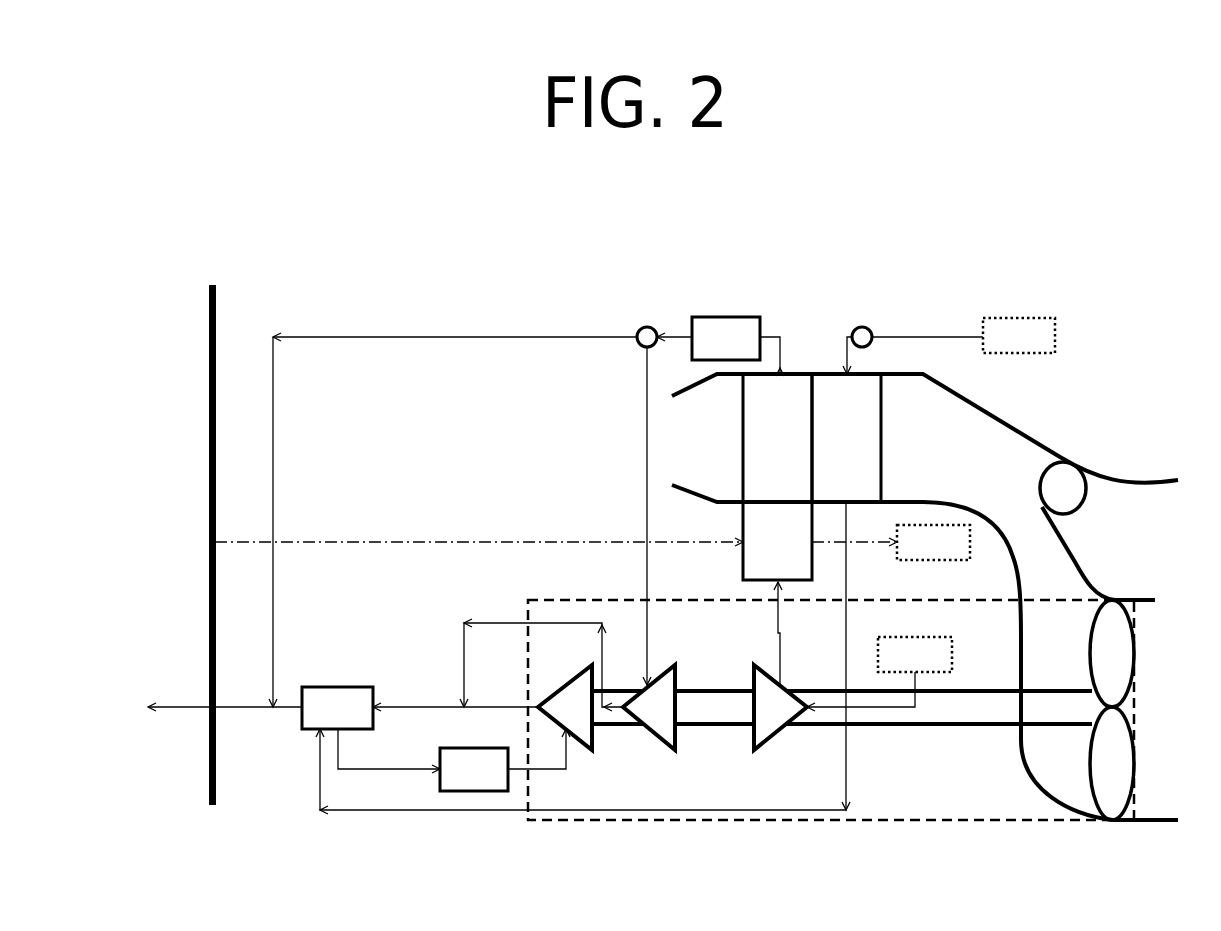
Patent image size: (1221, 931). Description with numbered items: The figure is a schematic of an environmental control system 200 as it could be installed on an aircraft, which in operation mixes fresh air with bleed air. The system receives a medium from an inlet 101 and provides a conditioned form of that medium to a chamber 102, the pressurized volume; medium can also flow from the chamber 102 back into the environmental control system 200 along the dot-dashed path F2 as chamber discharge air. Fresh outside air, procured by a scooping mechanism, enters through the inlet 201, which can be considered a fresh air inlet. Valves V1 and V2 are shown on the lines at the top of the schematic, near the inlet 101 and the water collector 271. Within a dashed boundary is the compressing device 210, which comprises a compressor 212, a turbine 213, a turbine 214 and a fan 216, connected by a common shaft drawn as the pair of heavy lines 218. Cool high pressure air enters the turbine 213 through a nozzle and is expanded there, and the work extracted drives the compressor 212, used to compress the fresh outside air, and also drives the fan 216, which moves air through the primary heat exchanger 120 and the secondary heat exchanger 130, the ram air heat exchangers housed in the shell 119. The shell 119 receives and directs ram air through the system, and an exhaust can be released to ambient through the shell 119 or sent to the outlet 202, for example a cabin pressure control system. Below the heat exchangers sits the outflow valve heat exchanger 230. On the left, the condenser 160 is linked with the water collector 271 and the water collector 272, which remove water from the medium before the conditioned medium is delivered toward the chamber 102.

The environmental control system 200 is at (1125, 144).
The chamber 102 is at (210, 285).
The path for the medium F2 is at (420, 542).
The valve V2 is at (638, 331).
The valve V1 is at (855, 329).
The water collector 271 is at (743, 352).
The secondary heat exchanger 130 is at (793, 454).
The primary heat exchanger 120 is at (863, 454).
The outflow valve heat exchanger 230 is at (793, 556).
The condenser 160 is at (355, 722).
The water collector 272 is at (492, 784).
The inlet 101 is at (1019, 335).
The outlet 202 is at (933, 542).
The inlet 201 is at (915, 654).
The compressing device 210 is at (698, 822).
The shaft / conduit 218 is at (968, 725).
The turbine 213 is at (590, 721).
The turbine 214 is at (673, 721).
The compressor 212 is at (794, 721).
The fan 216 is at (1070, 760).
The shell 119 is at (1062, 457).